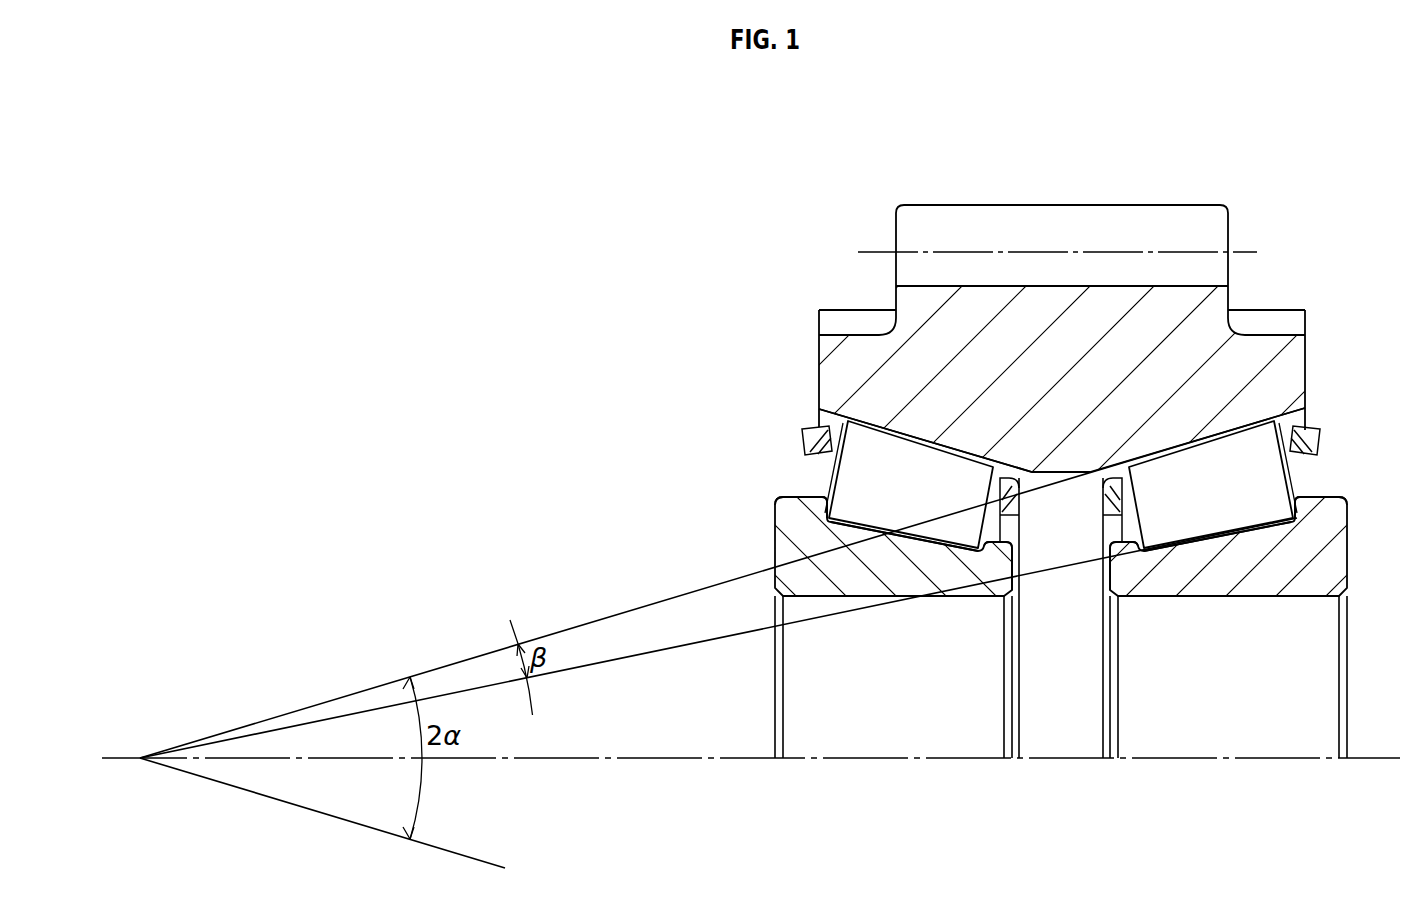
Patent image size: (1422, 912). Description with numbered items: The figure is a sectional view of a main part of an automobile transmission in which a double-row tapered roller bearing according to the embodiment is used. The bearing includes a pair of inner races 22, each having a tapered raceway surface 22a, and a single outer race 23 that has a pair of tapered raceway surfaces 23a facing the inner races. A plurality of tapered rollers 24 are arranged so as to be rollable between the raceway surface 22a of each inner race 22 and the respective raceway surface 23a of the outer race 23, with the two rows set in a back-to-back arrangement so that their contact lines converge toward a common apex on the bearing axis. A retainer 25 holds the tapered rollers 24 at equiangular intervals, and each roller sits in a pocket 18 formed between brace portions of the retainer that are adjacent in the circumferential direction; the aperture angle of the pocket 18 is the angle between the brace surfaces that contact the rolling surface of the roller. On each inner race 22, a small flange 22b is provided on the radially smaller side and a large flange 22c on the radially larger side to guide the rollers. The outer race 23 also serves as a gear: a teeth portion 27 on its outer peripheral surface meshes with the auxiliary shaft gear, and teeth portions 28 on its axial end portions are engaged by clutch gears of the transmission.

The pocket 18 is at (986, 476).
The inner race 22 is at (773, 552).
The raceway surface 22a is at (924, 536).
The small flange 22b is at (1121, 548).
The large flange 22c is at (795, 505).
The outer race 23 is at (827, 347).
The raceway surface 23a is at (893, 440).
The tapered roller 24 is at (872, 513).
The retainer 25 is at (812, 440).
The teeth portion 27 is at (1020, 226).
The teeth portion 28 is at (852, 325).